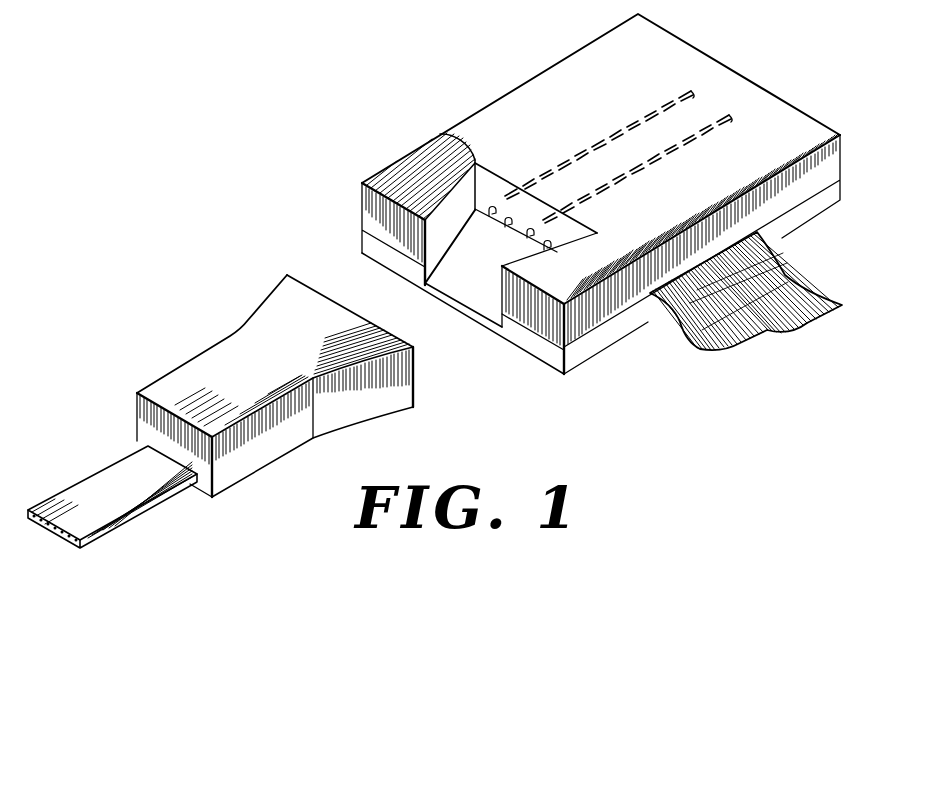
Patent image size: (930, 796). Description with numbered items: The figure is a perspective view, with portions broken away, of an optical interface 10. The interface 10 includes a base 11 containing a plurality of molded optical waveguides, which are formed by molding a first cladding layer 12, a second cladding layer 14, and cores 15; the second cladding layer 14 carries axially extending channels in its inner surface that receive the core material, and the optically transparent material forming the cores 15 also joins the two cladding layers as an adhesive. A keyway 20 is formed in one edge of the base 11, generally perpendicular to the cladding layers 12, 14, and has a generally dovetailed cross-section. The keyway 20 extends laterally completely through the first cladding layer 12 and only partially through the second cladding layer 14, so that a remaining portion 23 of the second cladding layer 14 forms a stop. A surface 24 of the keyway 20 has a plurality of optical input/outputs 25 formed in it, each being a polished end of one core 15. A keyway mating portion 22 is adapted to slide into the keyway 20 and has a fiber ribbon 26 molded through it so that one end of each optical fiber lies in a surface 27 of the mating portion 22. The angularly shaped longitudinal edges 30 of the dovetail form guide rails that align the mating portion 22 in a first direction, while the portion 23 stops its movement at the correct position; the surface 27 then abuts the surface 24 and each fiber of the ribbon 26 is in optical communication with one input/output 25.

The optical interface 10 is at (189, 250).
The base 11 is at (780, 153).
The first cladding layer 12 is at (363, 197).
The second cladding layer 14 is at (530, 340).
The cores 15 is at (688, 90).
The keyway 20 is at (437, 284).
The keyway mating portion 22 is at (318, 357).
The remaining portion of cladding layer 23 is at (458, 306).
The surface of keyway 24 is at (488, 173).
The optical input/outputs 25 is at (525, 242).
The fiber ribbon 26 is at (103, 482).
The surface of keyway mating portion 27 is at (322, 292).
The angularly shaped longitudinal edges 30 is at (475, 158).